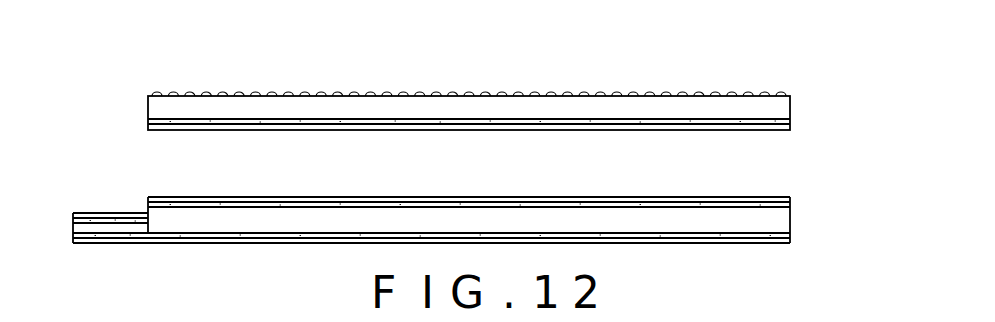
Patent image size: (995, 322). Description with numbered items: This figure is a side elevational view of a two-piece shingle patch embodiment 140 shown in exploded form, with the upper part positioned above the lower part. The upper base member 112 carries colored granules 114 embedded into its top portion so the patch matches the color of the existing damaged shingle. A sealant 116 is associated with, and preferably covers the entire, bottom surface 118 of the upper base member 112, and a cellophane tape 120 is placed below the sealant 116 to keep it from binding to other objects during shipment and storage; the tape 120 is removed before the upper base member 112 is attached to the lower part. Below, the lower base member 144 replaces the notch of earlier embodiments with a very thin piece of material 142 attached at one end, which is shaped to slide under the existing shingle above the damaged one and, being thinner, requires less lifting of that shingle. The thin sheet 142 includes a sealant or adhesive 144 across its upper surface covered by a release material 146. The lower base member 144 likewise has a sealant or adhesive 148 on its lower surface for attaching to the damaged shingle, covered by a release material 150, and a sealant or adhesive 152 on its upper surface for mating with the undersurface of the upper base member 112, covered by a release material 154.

The upper base member 112 is at (495, 102).
The colored granules 114 is at (543, 93).
The sealant 116 is at (737, 121).
The bottom surface 118 is at (765, 124).
The cellophane tape 120 is at (237, 130).
The embodiment 140 is at (436, 151).
The thin piece of material 142 is at (83, 228).
The lower base member 144 is at (88, 221).
The release material 146 is at (103, 217).
The sealant 148 is at (790, 236).
The release material 150 is at (288, 242).
The adhesive 152 is at (707, 208).
The release material 154 is at (632, 198).